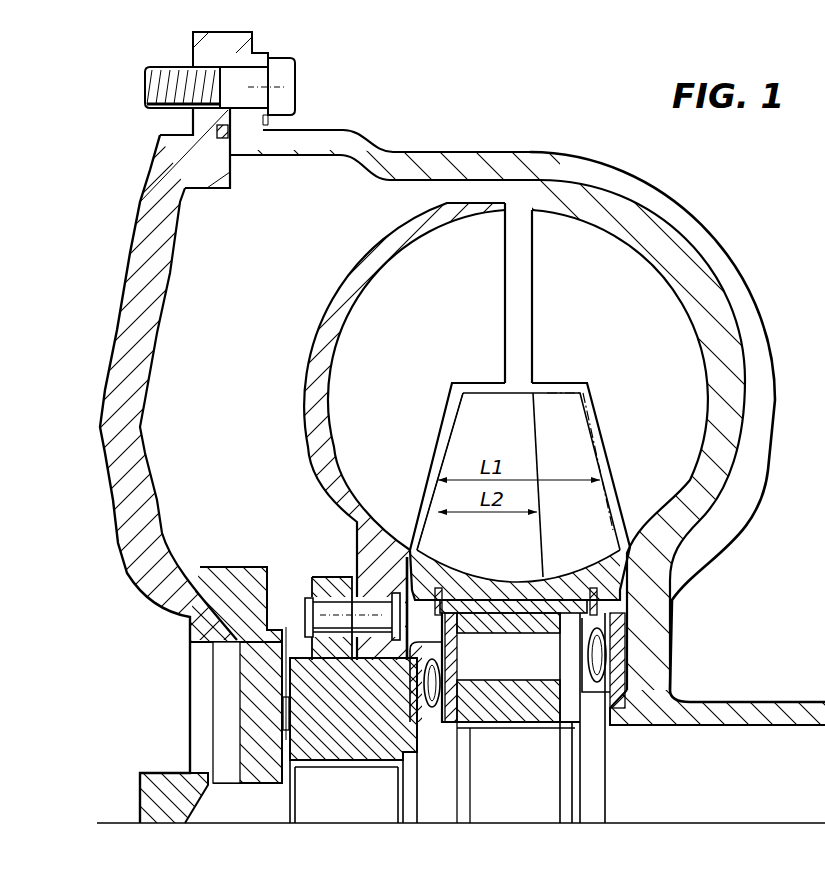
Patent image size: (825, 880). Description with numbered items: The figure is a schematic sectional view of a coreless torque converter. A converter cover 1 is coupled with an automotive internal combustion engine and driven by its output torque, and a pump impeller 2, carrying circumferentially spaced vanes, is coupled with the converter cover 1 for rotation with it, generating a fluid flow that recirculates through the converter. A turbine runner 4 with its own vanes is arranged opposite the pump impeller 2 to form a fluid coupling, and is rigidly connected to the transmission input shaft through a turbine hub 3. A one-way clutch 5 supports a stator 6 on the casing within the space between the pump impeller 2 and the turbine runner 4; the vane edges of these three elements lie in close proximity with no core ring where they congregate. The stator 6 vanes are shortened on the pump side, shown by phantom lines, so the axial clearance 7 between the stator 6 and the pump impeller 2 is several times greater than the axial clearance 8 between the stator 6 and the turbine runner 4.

The converter cover 1 is at (140, 253).
The pump impeller 2 is at (633, 313).
The turbine hub 3 is at (353, 730).
The turbine runner 4 is at (458, 282).
The one-way clutch 5 is at (540, 660).
The stator 6 is at (490, 538).
The axial clearance 7 is at (600, 450).
The axial clearance 8 is at (467, 450).